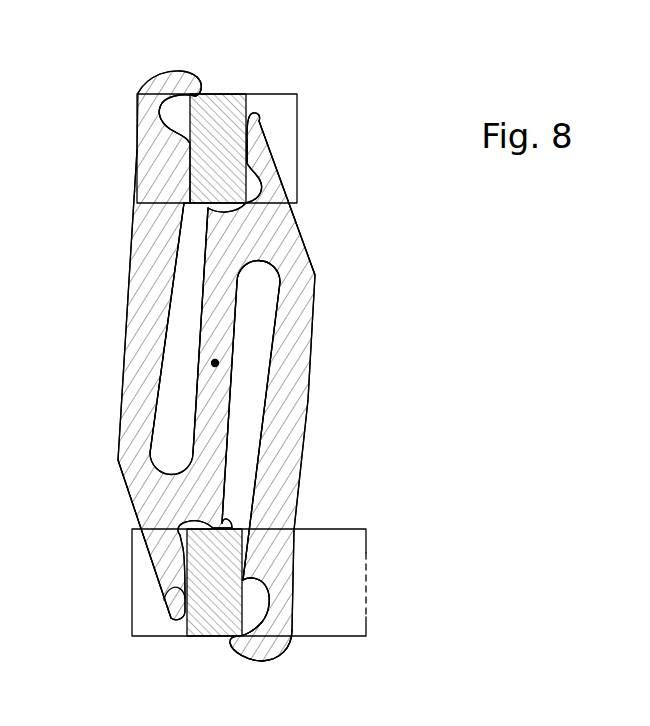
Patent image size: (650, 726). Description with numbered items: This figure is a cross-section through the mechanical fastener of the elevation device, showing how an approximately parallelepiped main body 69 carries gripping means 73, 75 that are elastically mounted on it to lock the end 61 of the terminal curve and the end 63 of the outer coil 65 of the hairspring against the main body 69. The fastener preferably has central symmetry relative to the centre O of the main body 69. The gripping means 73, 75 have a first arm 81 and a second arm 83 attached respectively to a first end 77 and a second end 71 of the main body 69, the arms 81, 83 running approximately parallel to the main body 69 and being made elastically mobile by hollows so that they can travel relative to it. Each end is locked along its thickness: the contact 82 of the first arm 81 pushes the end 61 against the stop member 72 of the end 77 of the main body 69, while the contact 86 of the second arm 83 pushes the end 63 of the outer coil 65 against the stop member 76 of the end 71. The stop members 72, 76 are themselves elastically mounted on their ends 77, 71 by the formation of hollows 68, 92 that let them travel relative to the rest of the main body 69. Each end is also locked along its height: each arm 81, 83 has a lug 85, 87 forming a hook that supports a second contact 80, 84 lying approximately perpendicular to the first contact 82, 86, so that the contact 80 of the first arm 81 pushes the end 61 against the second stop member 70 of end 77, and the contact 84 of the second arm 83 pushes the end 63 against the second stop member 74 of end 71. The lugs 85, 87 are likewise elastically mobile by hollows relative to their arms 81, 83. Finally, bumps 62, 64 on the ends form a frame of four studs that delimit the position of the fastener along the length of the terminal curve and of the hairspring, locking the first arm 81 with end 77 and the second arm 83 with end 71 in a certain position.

The end of terminal curve 61 is at (207, 118).
The bump 62 is at (292, 108).
The end of outer coil 63 is at (210, 630).
The bump 64 is at (142, 633).
The outer coil 65 is at (353, 557).
The hollow 68 is at (267, 182).
The main body 69 is at (228, 323).
The second stop member 70 is at (213, 207).
The second end of main body 71 is at (140, 517).
The stop member 72 is at (254, 118).
The gripping means 73 is at (61, 302).
The second stop member 74 is at (218, 522).
The gripping means 75 is at (357, 456).
The stop member 76 is at (173, 634).
The first end of main body 77 is at (265, 242).
The second contact 80 is at (185, 78).
The first arm 81 is at (131, 339).
The contact 82 is at (186, 143).
The second arm 83 is at (306, 400).
The second contact 84 is at (236, 654).
The lug 85 is at (165, 73).
The contact 86 is at (260, 579).
The lug 87 is at (278, 653).
The hollow 92 is at (166, 557).
The centre of main body O is at (216, 363).